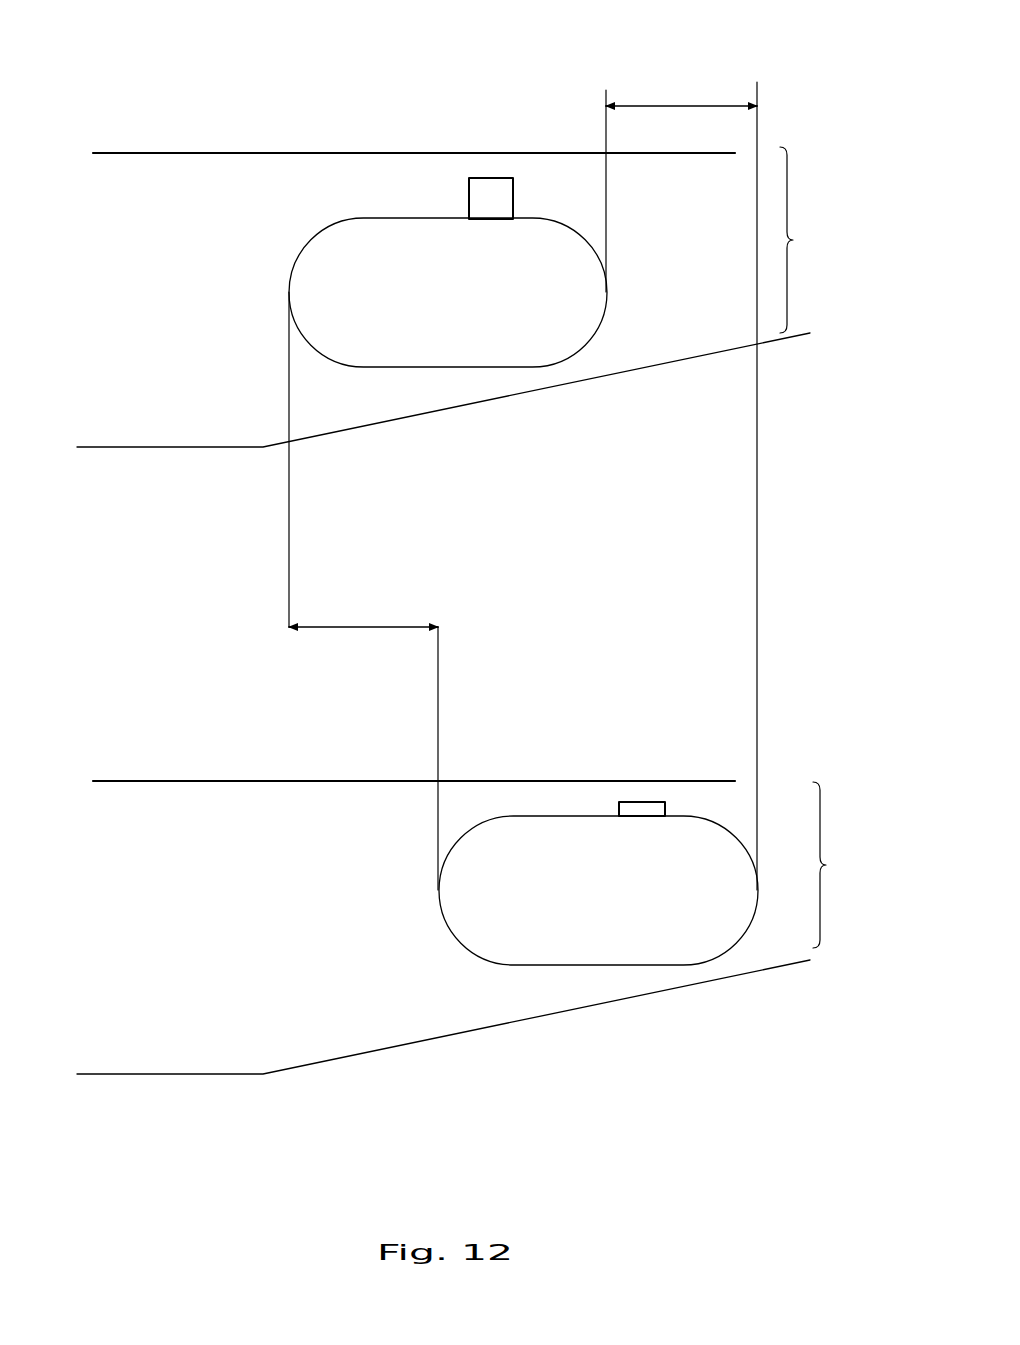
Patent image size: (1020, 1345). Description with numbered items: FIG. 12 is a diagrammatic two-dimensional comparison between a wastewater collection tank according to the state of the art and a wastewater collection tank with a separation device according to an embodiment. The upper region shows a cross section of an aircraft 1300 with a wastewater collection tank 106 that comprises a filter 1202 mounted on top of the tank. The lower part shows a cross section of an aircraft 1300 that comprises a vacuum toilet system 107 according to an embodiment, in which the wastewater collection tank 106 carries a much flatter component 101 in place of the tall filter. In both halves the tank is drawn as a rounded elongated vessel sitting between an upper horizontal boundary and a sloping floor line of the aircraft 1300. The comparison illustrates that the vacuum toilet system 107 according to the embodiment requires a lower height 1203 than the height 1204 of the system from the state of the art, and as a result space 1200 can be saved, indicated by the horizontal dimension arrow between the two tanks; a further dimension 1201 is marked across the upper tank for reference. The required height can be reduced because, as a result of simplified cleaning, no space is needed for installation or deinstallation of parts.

The sensor 101 is at (670, 802).
The wastewater collection tank 106 is at (575, 357).
The vacuum toilet system 107 is at (768, 853).
The space 1200 is at (341, 627).
The lateral distance 1201 is at (645, 100).
The filter 1202 is at (482, 187).
The lower height 1203 is at (848, 865).
The height 1204 is at (816, 240).
The aircraft 1300 is at (149, 476).